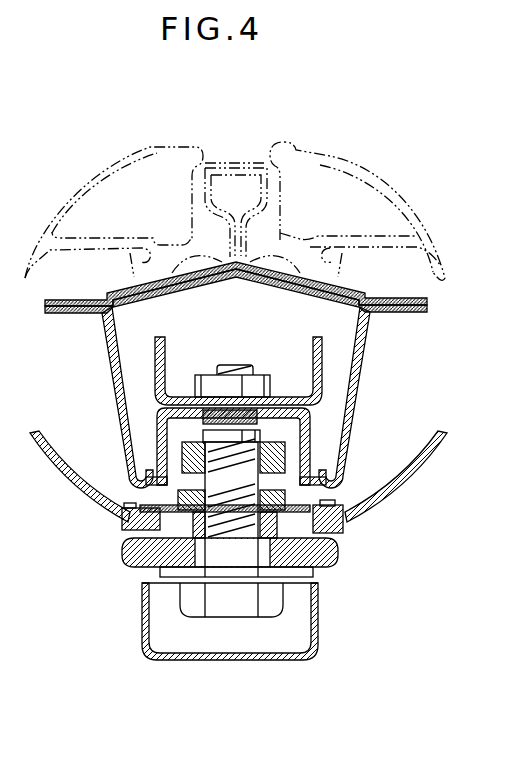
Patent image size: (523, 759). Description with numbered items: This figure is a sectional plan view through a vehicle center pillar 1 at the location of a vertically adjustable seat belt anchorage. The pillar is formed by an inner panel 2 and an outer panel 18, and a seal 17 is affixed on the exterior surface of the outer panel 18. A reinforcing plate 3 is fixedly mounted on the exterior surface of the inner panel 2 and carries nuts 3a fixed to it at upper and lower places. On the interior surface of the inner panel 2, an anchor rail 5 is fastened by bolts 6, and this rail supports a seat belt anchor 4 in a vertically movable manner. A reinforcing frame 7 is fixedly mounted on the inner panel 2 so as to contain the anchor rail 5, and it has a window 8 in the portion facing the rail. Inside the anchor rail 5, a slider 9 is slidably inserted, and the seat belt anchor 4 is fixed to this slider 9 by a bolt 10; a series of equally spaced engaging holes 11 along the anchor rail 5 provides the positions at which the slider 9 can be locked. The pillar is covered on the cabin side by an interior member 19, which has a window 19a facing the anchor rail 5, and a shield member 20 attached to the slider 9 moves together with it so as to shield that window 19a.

The center pillar 1 is at (251, 268).
The inner panel 2 is at (328, 410).
The reinforcing plate 3 is at (316, 356).
The nut 3a is at (262, 385).
The seat belt anchor 4 is at (123, 565).
The anchor rail 5 is at (167, 441).
The bolt 6 is at (234, 364).
The reinforcing frame 7 is at (118, 455).
The window 8 is at (143, 500).
The slider 9 is at (342, 458).
The bolt 10 is at (240, 598).
The engaging hole 11 is at (222, 411).
The seal 17 is at (322, 157).
The outer panel 18 is at (84, 299).
The interior member 19 is at (412, 487).
The window 19a is at (315, 533).
The shield member 20 is at (318, 568).